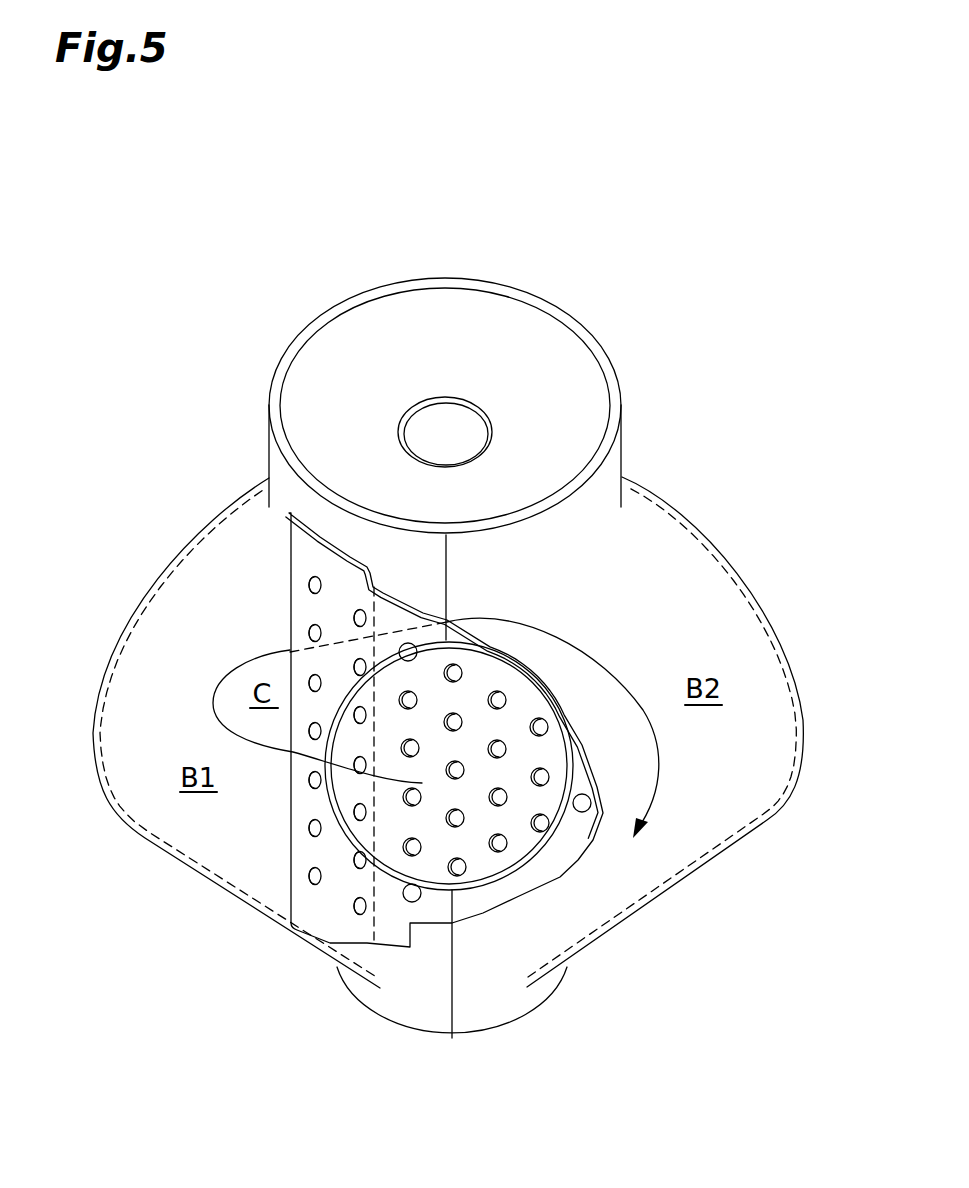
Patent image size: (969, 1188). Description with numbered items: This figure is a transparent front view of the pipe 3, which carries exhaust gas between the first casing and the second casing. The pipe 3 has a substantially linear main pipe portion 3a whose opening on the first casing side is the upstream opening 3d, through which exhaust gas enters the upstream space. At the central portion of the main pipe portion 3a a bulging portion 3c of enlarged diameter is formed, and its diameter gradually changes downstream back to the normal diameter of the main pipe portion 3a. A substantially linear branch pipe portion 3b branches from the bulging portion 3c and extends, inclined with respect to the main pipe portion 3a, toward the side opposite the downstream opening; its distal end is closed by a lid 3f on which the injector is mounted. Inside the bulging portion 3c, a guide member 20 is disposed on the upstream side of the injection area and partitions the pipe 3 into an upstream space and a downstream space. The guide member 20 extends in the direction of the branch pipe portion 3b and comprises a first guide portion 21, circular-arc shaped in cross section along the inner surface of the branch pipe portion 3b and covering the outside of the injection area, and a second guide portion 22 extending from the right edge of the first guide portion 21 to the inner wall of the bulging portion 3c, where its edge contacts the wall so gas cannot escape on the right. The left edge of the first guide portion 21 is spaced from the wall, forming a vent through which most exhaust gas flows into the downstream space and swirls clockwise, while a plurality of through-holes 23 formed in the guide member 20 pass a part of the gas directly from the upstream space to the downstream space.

The pipe 3 is at (774, 440).
The main pipe portion 3a is at (550, 847).
The branch pipe portion 3b is at (268, 450).
The bulging portion 3c is at (797, 678).
The upstream opening 3d is at (387, 820).
The lid 3f is at (538, 340).
The guide member 20 is at (371, 709).
The first guide portion 21 is at (350, 707).
The second guide portion 22 is at (508, 728).
The through-holes 23 is at (312, 583).